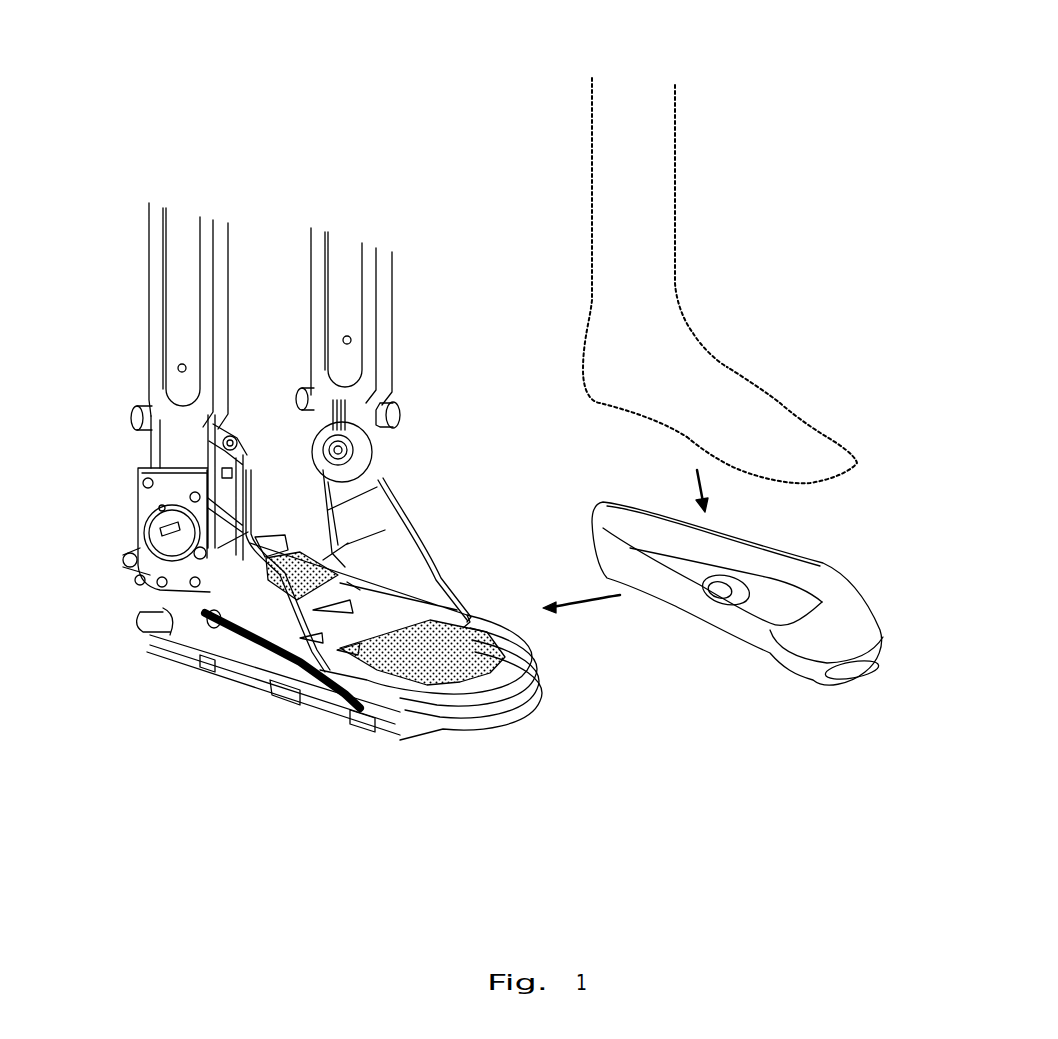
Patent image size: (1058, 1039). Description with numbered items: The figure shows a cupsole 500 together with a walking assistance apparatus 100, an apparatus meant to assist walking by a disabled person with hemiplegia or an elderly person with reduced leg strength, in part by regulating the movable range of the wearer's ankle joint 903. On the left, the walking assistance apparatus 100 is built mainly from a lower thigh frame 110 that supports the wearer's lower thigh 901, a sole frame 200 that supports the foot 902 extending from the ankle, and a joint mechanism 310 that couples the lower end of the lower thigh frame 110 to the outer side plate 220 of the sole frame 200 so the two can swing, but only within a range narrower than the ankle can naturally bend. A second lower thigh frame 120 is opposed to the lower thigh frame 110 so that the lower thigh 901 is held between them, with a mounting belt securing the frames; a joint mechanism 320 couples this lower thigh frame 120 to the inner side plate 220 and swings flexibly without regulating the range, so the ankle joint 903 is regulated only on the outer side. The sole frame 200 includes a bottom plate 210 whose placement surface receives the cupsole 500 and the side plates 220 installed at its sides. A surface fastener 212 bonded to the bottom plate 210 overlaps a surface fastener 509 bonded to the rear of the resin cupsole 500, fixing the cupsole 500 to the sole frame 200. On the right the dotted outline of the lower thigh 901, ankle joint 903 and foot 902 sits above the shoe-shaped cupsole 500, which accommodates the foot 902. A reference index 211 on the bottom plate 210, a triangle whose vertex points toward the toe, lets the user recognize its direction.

The walking assistance apparatus 100 is at (133, 213).
The lower thigh frame 110 is at (155, 333).
The lower thigh frame 120 is at (384, 335).
The sole frame 200 is at (325, 773).
The bottom plate 210 is at (340, 687).
The reference index 211 is at (417, 585).
The surface fastener 212 is at (305, 560).
The side plate 220 is at (413, 545).
The joint mechanism 310 is at (112, 467).
The joint mechanism 320 is at (423, 422).
The cupsole 500 is at (883, 688).
The surface fastener 509 is at (673, 600).
The lower thigh 901 is at (652, 160).
The foot 902 is at (775, 423).
The ankle joint 903 is at (612, 364).